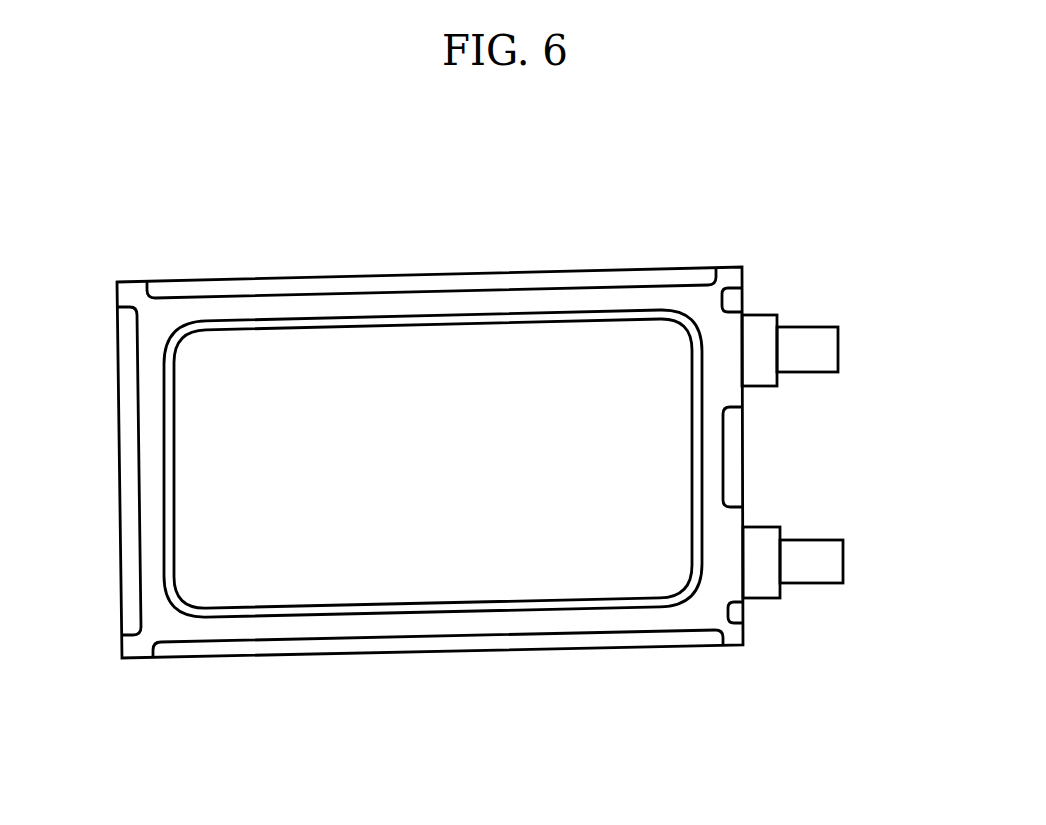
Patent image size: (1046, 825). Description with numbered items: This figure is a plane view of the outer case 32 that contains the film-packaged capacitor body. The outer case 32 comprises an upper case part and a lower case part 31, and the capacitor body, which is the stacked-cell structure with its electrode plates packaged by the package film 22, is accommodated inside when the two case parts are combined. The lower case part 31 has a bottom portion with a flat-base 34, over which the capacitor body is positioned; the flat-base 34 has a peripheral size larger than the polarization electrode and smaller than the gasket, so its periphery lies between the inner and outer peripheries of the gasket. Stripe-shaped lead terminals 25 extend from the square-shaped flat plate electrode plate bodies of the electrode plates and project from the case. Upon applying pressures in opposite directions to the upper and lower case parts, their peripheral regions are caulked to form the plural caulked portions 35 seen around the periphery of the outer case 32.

The package film 22 is at (765, 328).
The lead terminal 25 is at (828, 352).
The lower case part 31 is at (153, 304).
The outer case 32 is at (200, 256).
The flat-base 34 is at (418, 572).
The caulked portions 35 is at (433, 283).